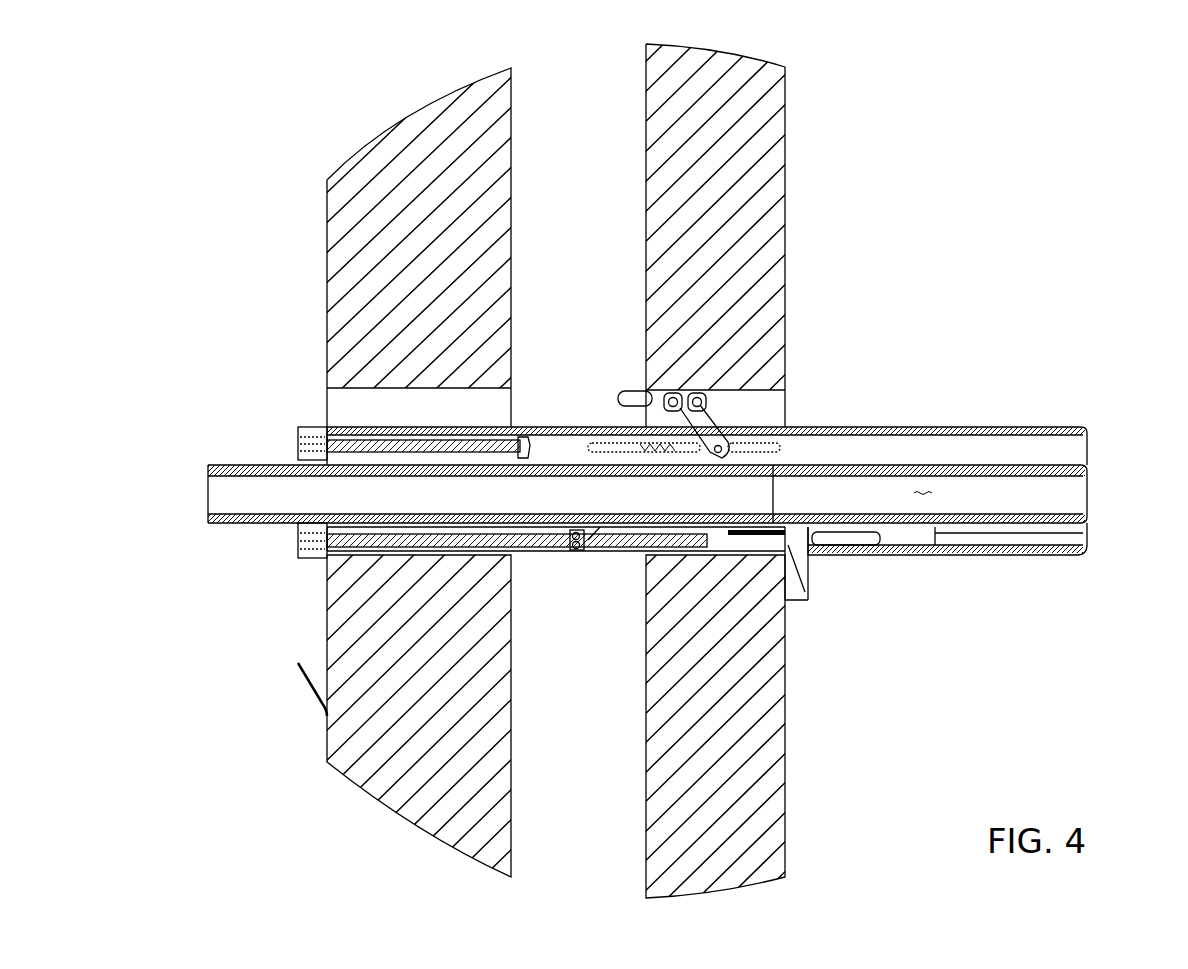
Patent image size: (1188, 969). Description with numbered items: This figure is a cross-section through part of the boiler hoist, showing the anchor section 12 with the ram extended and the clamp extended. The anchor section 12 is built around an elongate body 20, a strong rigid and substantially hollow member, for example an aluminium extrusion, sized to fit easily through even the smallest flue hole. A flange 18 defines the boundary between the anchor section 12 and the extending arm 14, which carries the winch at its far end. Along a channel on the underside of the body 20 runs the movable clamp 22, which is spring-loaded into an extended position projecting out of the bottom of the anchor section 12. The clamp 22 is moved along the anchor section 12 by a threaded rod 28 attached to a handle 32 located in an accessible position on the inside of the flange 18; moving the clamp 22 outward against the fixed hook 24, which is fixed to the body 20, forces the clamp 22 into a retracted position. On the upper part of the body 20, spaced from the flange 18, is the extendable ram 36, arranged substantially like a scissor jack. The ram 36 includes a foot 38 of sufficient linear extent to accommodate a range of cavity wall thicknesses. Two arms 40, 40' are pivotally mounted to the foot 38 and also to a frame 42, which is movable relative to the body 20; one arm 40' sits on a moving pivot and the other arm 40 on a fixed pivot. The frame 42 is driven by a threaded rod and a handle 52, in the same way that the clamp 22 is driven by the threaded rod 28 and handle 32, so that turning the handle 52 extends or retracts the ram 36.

The anchor section 12 is at (990, 262).
The extending arm 14 is at (208, 518).
The flange 18 is at (318, 390).
The elongate body 20 is at (1090, 470).
The movable clamp 22 is at (803, 582).
The fixed hook 24 is at (935, 556).
The threaded rod 28 is at (518, 545).
The handle 32 is at (298, 550).
The extendable ram 36 is at (727, 458).
The foot 38 is at (783, 395).
The arm 40 is at (671, 407).
The arm 40' is at (730, 353).
The frame 42 is at (527, 452).
The handle 52 is at (298, 442).